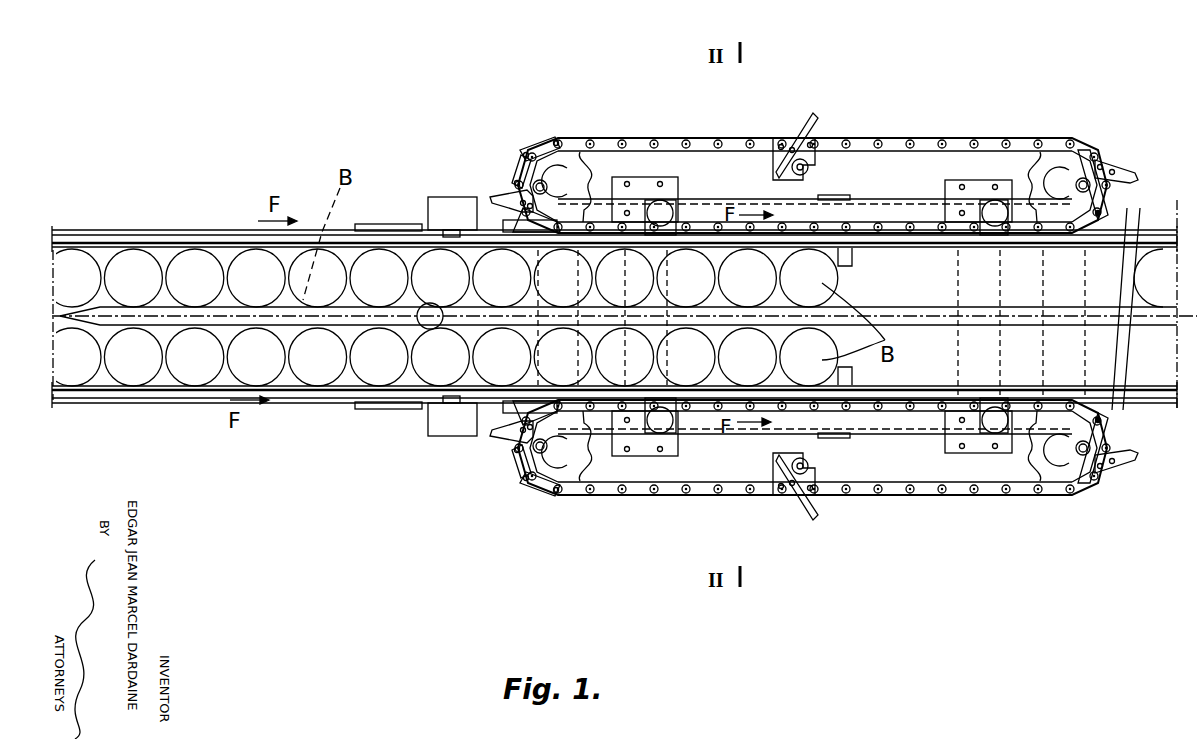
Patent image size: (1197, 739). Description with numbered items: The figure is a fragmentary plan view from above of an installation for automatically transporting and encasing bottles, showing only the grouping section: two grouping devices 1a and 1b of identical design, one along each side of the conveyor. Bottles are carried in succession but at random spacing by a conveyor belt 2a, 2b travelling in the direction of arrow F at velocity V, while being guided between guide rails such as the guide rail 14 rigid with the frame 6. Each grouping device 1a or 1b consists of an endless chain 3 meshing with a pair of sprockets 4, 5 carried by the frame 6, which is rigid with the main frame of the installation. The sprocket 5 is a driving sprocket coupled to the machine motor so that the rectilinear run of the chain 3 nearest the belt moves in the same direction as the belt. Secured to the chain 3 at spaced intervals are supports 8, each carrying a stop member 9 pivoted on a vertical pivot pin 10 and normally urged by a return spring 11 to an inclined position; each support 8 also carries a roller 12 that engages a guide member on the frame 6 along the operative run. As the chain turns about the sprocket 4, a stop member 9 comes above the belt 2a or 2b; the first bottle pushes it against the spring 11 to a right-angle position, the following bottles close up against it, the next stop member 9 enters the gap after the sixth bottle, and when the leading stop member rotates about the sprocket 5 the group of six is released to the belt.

The grouping device 1a is at (636, 134).
The grouping device 1b is at (643, 498).
The conveyor belt 2a is at (172, 250).
The conveyor belt 2b is at (168, 388).
The endless chain 3 is at (955, 140).
The sprocket 4 is at (541, 165).
The driving sprocket 5 is at (1047, 152).
The frame 6 is at (890, 220).
The support 8 is at (773, 140).
The stop member 9 is at (495, 195).
The vertical pivot pin 10 is at (812, 128).
The return spring 11 is at (788, 135).
The roller 12 is at (812, 170).
The guide rail 14 is at (903, 252).